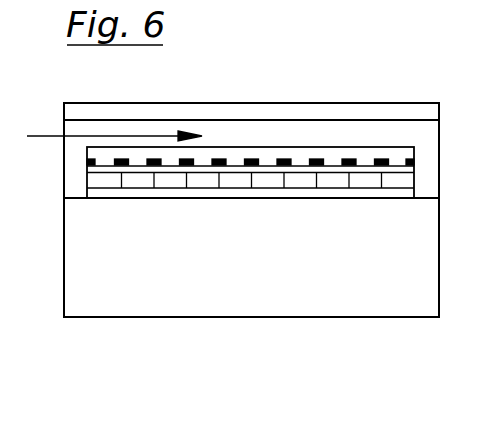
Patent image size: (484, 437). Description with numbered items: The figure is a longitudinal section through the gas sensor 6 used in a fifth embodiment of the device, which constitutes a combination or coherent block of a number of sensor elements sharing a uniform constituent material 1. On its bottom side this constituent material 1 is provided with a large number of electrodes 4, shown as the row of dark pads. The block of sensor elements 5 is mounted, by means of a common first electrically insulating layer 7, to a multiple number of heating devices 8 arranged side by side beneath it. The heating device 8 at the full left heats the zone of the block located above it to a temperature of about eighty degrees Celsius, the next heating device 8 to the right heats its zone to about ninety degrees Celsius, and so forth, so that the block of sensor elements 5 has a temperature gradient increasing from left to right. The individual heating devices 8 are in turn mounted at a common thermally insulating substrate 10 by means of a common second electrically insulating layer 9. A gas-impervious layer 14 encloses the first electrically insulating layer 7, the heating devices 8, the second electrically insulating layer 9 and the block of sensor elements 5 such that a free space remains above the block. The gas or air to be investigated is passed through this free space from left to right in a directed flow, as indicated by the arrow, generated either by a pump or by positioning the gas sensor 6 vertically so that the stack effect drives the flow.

The constituent material 1 is at (333, 155).
The electrodes 4 is at (118, 167).
The block of sensor elements 5 is at (292, 143).
The gas sensor 6 is at (223, 419).
The common first electrically insulating layer 7 is at (138, 171).
The heating devices 8 is at (168, 183).
The common second electrically insulating layer 9 is at (262, 193).
The thermally insulating substrate 10 is at (287, 240).
The gas-impervious layer 14 is at (273, 115).